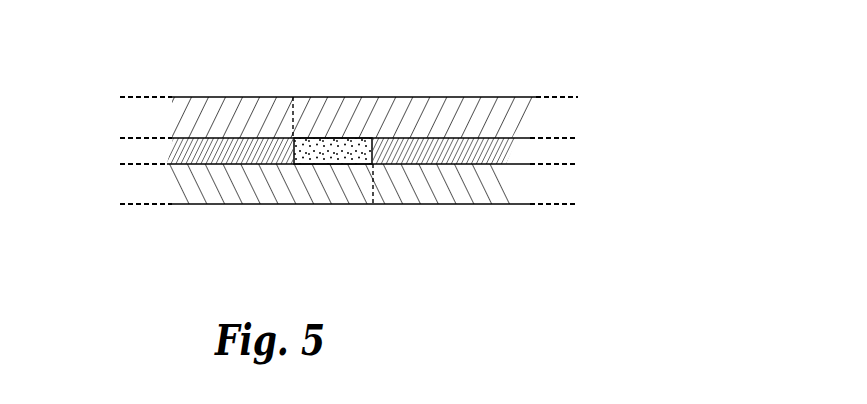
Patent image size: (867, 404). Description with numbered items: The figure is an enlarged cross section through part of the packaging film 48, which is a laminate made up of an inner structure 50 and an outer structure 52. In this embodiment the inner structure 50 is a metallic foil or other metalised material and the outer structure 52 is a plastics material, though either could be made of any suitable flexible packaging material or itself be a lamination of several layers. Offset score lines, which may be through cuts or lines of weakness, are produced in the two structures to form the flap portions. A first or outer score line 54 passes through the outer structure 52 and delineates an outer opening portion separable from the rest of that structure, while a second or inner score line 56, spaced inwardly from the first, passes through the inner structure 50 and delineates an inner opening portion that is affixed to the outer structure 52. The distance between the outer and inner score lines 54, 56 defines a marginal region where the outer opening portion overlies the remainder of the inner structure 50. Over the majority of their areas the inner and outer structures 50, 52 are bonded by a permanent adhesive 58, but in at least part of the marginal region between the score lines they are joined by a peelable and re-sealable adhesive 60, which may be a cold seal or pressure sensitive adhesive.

The film 48 is at (110, 85).
The inner structure 50 is at (542, 184).
The outer structure 52 is at (365, 103).
The outer score line 54 is at (293, 113).
The inner score line 56 is at (373, 177).
The permanent adhesive 58 is at (208, 163).
The peelable and re-sealable adhesive 60 is at (333, 152).